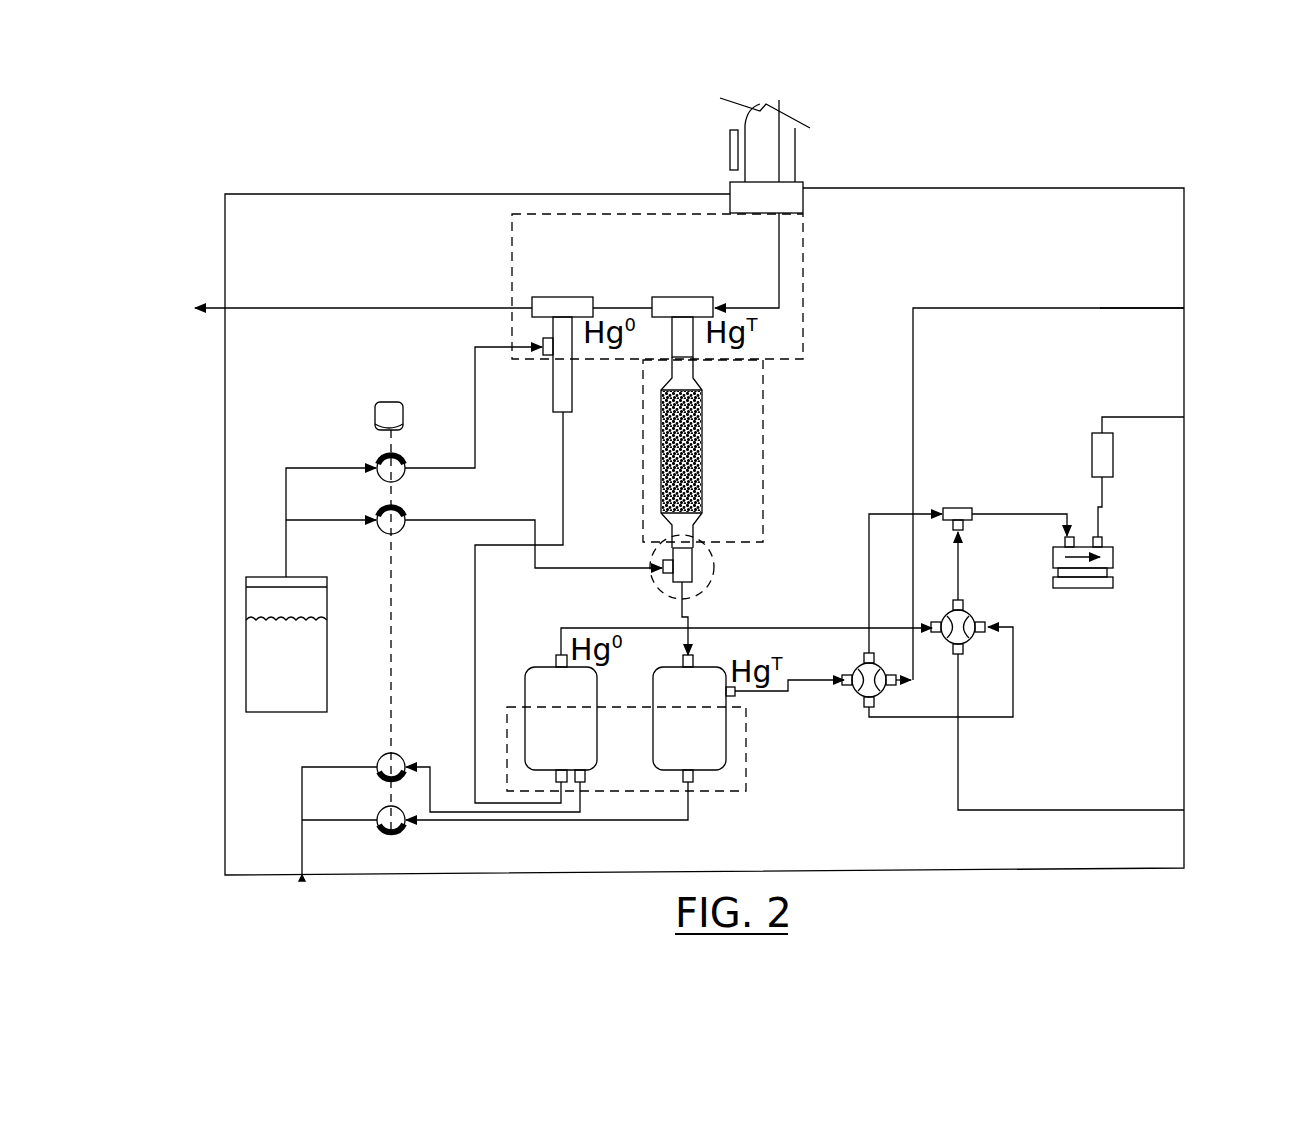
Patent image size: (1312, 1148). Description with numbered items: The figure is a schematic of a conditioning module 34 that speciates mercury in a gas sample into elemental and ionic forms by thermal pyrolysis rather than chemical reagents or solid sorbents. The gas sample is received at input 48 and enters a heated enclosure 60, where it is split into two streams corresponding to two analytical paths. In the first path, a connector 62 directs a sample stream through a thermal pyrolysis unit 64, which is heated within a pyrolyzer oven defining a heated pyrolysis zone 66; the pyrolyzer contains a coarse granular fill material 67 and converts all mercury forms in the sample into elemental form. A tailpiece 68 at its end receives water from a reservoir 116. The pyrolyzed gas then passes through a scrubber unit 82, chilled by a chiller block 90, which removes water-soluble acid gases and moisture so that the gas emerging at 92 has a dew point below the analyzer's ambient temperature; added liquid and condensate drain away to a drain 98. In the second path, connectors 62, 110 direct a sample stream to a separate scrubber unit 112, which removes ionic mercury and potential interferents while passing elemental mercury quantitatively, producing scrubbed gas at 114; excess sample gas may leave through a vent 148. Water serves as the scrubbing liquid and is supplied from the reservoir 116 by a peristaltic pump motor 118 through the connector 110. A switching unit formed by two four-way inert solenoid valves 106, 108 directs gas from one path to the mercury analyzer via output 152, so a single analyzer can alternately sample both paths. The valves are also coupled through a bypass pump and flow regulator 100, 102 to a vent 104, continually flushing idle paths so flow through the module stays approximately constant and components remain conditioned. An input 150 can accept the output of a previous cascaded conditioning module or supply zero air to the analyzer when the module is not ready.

The conditioning module 34 is at (1103, 152).
The input 48 is at (781, 100).
The heated enclosure 60 is at (588, 255).
The connector 62 is at (685, 297).
The thermal pyrolysis unit 64 is at (702, 470).
The heated pyrolysis zone 66 is at (750, 418).
The fill material 67 is at (670, 458).
The tailpiece 68 is at (712, 580).
The scrubber unit 82 is at (726, 760).
The chiller block 90 is at (643, 778).
The scrubbed gas outlet 92 is at (742, 692).
The drain 98 is at (302, 880).
The bypass pump 100 is at (1075, 590).
The flow regulator 102 is at (1090, 450).
The vent 104 is at (1186, 415).
The four-way inert solenoid valve 106 is at (860, 665).
The four-way inert solenoid valve 108 is at (951, 612).
The connector 110 is at (553, 326).
The scrubber unit 112 is at (597, 685).
The scrubbed gas 114 is at (550, 650).
The reservoir 116 is at (327, 650).
The peristaltic pump motor 118 is at (389, 402).
The vent 148 is at (205, 308).
The input 150 is at (1186, 306).
The output 152 is at (1186, 808).